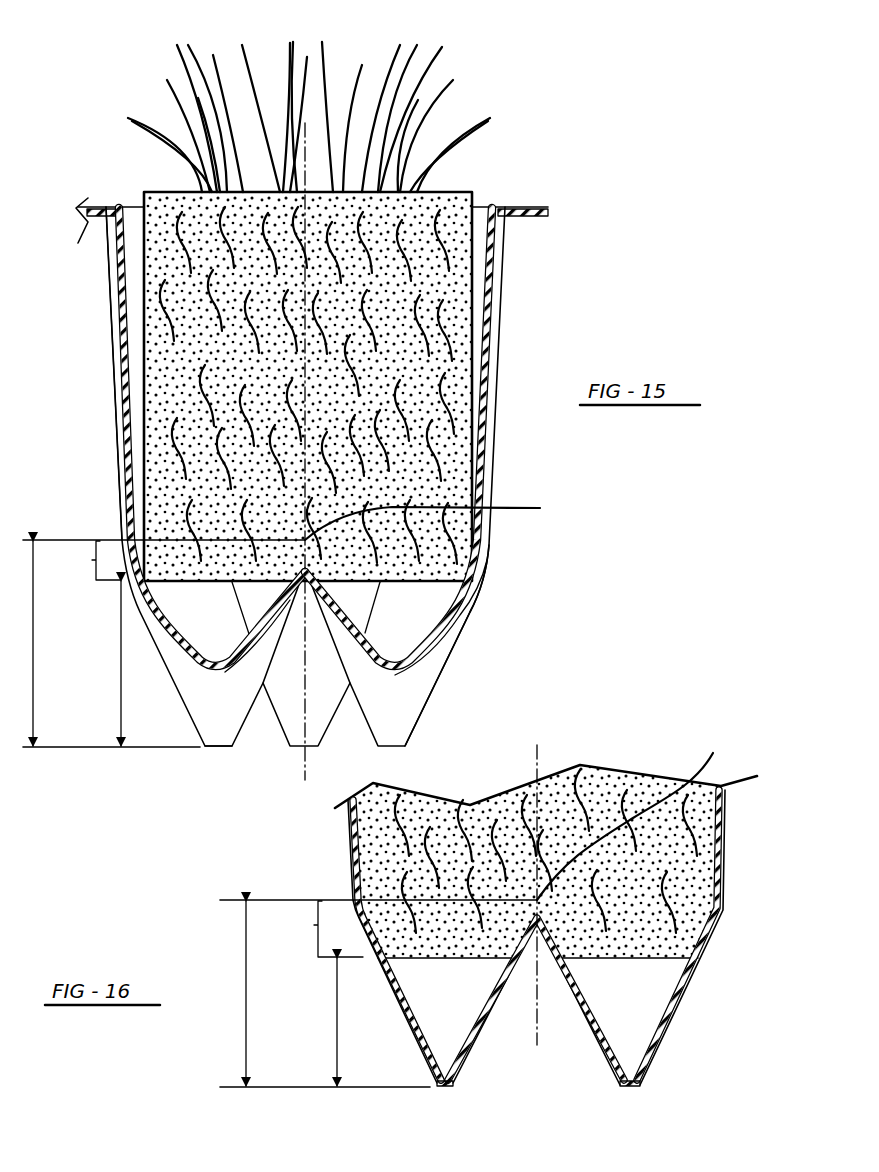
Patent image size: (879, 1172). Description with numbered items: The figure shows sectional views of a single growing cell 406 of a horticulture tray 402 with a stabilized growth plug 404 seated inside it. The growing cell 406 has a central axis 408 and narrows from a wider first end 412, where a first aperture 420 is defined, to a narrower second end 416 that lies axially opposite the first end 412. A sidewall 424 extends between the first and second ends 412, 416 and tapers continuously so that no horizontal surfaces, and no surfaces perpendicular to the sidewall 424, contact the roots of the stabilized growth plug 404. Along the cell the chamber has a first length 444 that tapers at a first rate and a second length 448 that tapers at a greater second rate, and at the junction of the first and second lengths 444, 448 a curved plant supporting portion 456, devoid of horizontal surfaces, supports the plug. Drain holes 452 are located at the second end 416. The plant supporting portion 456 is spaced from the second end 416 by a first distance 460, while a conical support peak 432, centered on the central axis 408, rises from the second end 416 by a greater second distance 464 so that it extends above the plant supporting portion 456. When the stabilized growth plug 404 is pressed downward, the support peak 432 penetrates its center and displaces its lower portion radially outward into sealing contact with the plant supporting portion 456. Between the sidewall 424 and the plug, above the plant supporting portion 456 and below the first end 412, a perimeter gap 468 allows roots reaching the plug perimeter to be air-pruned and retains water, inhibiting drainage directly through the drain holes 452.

In FIG. 15, the horticulture tray 402 is at (520, 90).
In FIG. 15, the stabilized growth plug 404 is at (452, 192).
In FIG. 15, the growing cell 406 is at (130, 180).
In FIG. 15, the central axis 408 is at (305, 760).
In FIG. 16, the central axis 408 is at (537, 762).
In FIG. 15, the first end 412 is at (97, 207).
In FIG. 15, the second end 416 is at (217, 748).
In FIG. 16, the second end 416 is at (430, 1088).
In FIG. 15, the first aperture 420 is at (488, 207).
In FIG. 15, the sidewall 424 is at (123, 353).
In FIG. 16, the sidewall 424 is at (355, 862).
In FIG. 15, the support peak 432 is at (442, 518).
In FIG. 16, the support peak 432 is at (637, 816).
In FIG. 15, the first length 444 is at (490, 318).
In FIG. 16, the first length 444 is at (725, 862).
In FIG. 15, the second length 448 is at (443, 615).
In FIG. 16, the second length 448 is at (670, 1013).
In FIG. 16, the drain hole 452 is at (455, 1088).
In FIG. 15, the plant supporting portion 456 is at (164, 560).
In FIG. 16, the plant supporting portion 456 is at (378, 928).
In FIG. 15, the first distance 460 is at (121, 670).
In FIG. 16, the first distance 460 is at (337, 1012).
In FIG. 15, the second distance 464 is at (37, 637).
In FIG. 16, the second distance 464 is at (246, 970).
In FIG. 15, the perimeter gap 468 is at (137, 278).